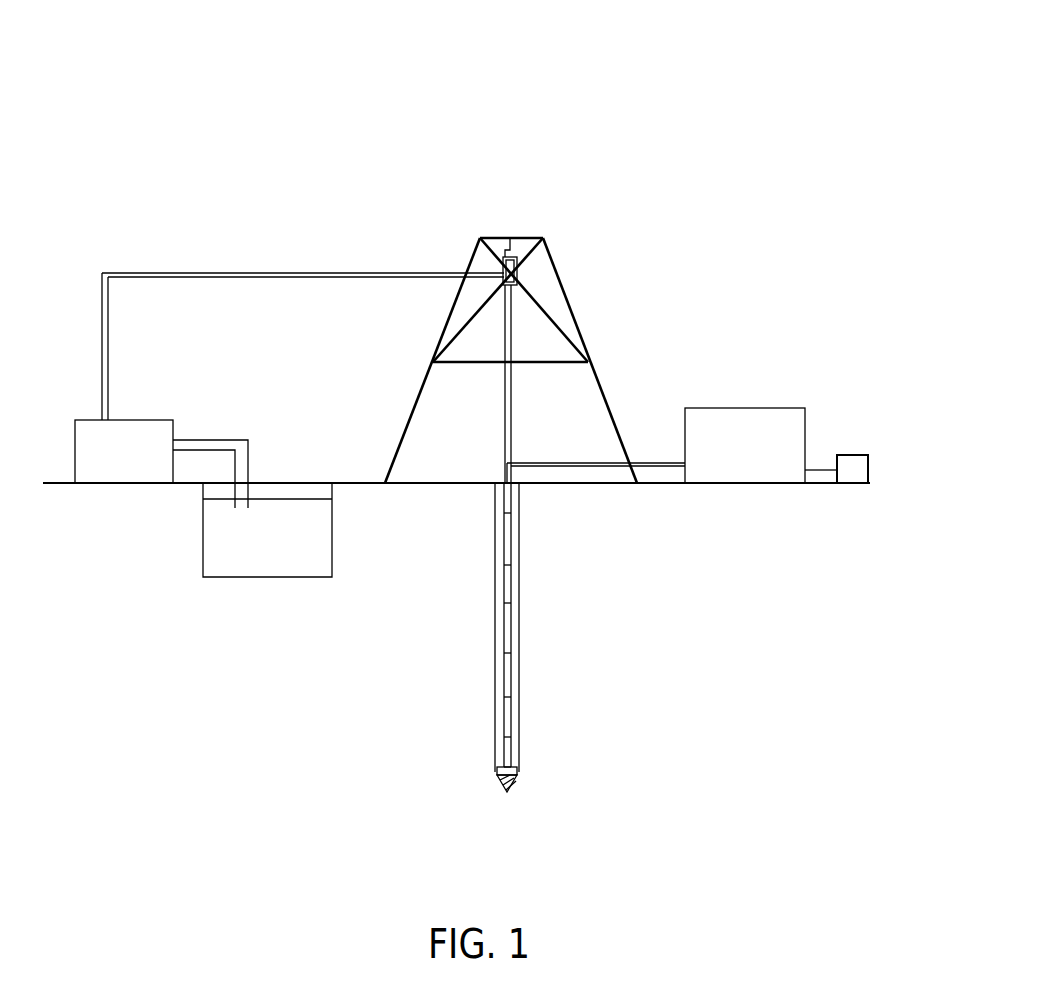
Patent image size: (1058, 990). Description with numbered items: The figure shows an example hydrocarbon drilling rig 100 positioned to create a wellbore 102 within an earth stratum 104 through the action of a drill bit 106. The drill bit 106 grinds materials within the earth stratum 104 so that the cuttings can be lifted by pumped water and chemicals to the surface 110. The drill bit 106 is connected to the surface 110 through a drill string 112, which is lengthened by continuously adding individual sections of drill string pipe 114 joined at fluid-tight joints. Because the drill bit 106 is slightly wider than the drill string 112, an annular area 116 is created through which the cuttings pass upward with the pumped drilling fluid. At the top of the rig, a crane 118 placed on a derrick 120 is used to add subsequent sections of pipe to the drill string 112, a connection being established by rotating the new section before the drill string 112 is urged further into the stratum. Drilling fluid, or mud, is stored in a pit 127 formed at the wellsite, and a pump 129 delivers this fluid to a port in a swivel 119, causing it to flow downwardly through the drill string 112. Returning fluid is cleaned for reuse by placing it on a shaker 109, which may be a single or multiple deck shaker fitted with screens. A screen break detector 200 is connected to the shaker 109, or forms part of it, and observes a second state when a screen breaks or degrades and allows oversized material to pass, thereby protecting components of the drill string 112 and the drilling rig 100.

The hydrocarbon drilling rig 100 is at (672, 160).
The wellbore 102 is at (518, 503).
The earth stratum 104 is at (700, 532).
The drill bit 106 is at (512, 783).
The shaker 109 is at (740, 406).
The surface 110 is at (460, 482).
The drill string 112 is at (510, 720).
The drill string pipe 114 is at (507, 548).
The annular area 116 is at (517, 668).
The crane 118 is at (503, 250).
The swivel 119 is at (513, 273).
The derrick 120 is at (590, 348).
The pit 127 is at (318, 568).
The pump 129 is at (120, 480).
The screen break detector 200 is at (868, 477).